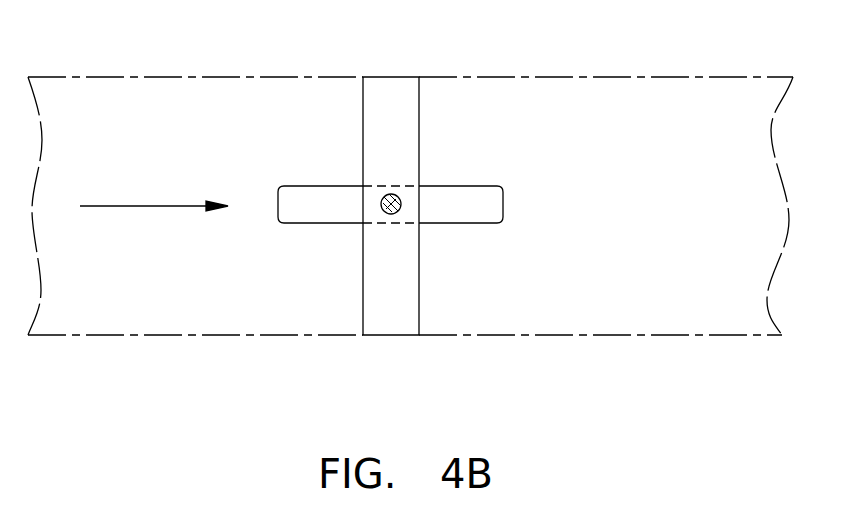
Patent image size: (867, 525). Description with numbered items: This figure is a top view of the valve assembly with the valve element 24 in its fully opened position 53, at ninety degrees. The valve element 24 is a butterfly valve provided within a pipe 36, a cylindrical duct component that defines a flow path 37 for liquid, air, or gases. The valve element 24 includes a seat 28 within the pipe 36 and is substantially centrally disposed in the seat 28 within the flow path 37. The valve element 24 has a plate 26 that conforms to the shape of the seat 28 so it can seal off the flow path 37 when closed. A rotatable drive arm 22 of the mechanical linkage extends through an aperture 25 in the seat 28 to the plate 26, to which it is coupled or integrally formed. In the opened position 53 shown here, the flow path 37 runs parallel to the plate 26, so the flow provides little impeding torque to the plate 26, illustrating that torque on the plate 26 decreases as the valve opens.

The pipe 36 is at (507, 77).
The opened position 53 is at (297, 130).
The rotatable drive arm 22 is at (386, 196).
The aperture 25 is at (403, 188).
The plate 26 is at (478, 203).
The seat 28 is at (397, 287).
The valve element 24 is at (356, 258).
The flow path 37 is at (160, 206).